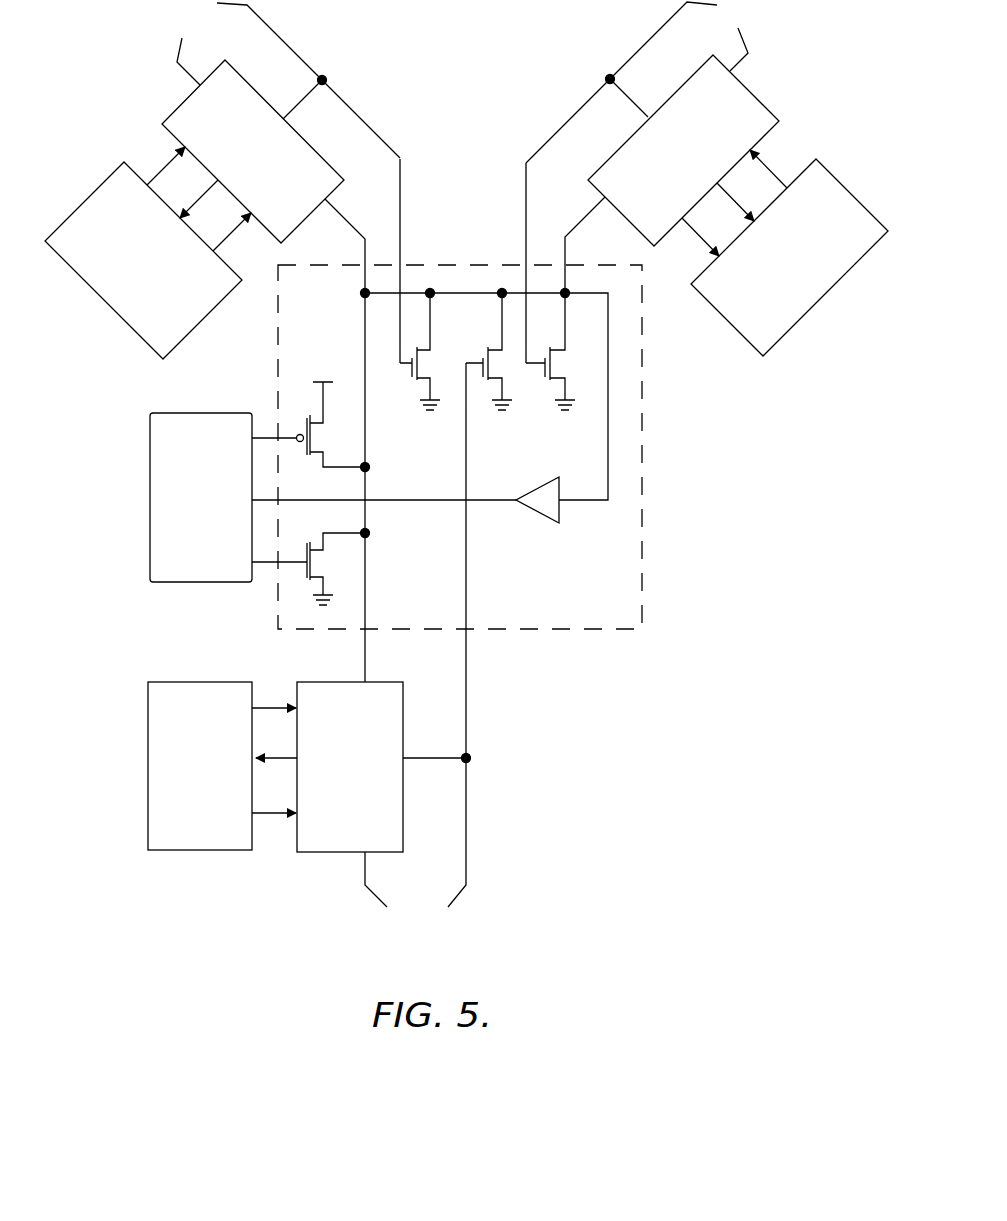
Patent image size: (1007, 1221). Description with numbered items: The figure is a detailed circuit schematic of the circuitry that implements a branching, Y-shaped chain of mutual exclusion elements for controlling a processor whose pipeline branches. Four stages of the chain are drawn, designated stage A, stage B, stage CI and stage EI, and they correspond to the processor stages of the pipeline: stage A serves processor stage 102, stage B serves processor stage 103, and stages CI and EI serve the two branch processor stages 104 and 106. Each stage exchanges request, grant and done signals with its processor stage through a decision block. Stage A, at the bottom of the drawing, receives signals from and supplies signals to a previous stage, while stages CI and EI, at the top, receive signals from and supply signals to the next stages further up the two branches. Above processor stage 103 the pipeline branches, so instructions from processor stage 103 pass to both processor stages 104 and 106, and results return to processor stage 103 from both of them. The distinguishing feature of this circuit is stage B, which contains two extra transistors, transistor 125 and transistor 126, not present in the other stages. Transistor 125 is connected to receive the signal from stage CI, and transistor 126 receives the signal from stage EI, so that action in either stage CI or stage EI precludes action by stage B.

The processor stage 102 is at (146, 779).
The processor stage 103 is at (147, 532).
The processor stage 104 is at (144, 342).
The processor stage 106 is at (790, 334).
The transistor 125 is at (410, 379).
The transistor 126 is at (592, 366).
The stage A is at (406, 840).
The stage B is at (644, 572).
The stage C1 CI is at (171, 115).
The stage E1 EI is at (766, 106).